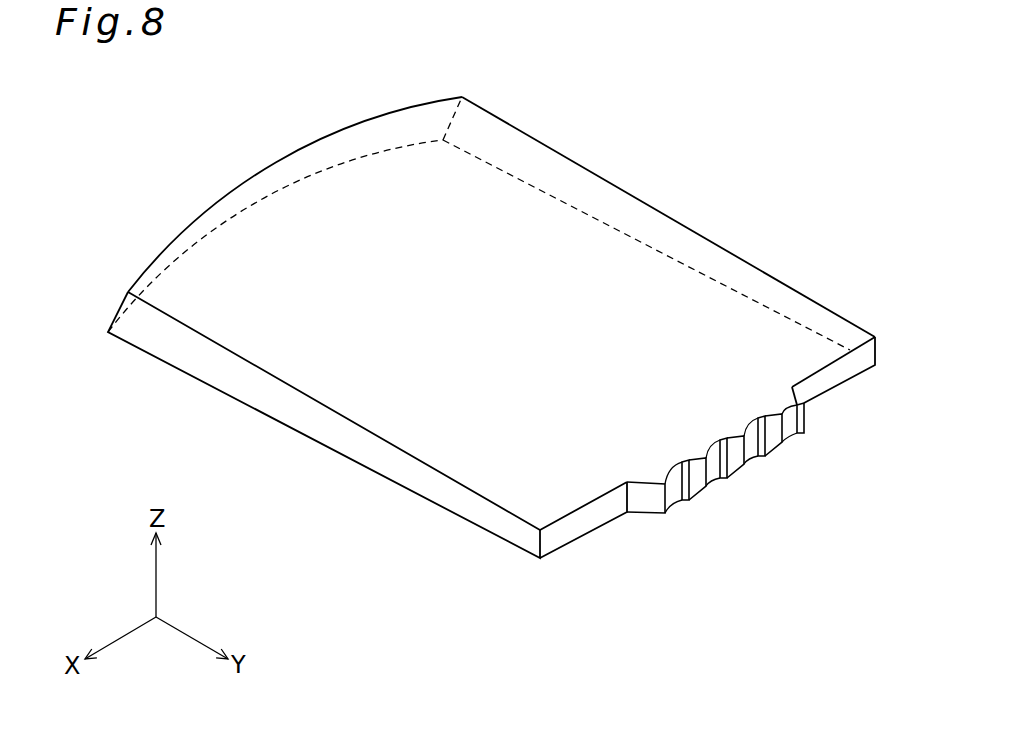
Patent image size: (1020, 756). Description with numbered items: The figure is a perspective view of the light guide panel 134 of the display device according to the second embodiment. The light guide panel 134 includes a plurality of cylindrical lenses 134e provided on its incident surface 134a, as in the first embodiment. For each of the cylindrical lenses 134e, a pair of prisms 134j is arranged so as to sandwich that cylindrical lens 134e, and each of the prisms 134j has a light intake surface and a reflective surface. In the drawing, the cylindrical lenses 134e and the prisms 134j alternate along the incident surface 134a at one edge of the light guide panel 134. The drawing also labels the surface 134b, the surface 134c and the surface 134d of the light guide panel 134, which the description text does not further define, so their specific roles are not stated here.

The light guide panel 134 is at (466, 342).
The incident surface 134a is at (567, 535).
The top surface 134b is at (482, 318).
The curved edge 134c is at (270, 182).
The front side surface 134d is at (300, 415).
The cylindrical lens 134e is at (707, 426).
The prism 134j is at (657, 513).